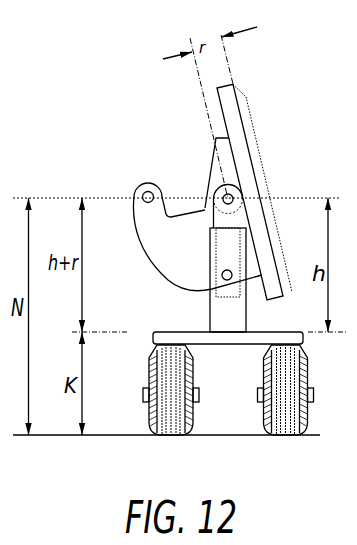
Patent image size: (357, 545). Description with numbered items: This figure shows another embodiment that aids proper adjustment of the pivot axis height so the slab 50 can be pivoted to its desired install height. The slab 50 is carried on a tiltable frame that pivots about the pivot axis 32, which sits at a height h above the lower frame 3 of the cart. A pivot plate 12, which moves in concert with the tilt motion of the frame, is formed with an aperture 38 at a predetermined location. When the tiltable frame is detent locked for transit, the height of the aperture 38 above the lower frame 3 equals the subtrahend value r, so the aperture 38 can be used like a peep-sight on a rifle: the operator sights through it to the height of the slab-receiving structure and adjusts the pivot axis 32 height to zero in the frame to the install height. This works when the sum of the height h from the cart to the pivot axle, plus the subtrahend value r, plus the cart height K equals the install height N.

The slab 50 is at (268, 132).
The pivot plate 12 is at (157, 275).
The aperture 38 is at (143, 183).
The pivot axis 32 is at (238, 190).
The lower frame 3 is at (220, 345).